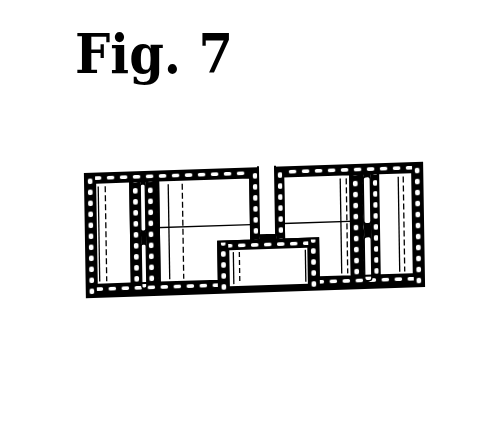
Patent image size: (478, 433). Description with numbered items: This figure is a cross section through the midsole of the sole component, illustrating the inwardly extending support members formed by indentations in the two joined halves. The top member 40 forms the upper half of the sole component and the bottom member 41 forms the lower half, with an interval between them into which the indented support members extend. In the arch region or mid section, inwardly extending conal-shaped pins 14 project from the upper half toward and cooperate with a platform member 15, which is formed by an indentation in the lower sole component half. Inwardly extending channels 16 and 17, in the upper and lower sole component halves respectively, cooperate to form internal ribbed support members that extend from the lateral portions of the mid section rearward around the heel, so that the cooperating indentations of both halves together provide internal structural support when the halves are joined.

The top member 40 is at (123, 173).
The conal-shaped pins 14 is at (270, 168).
The inwardly extending channel 16 is at (367, 167).
The inwardly extending channel 17 is at (148, 295).
The platform member 15 is at (282, 288).
The bottom member 41 is at (398, 283).